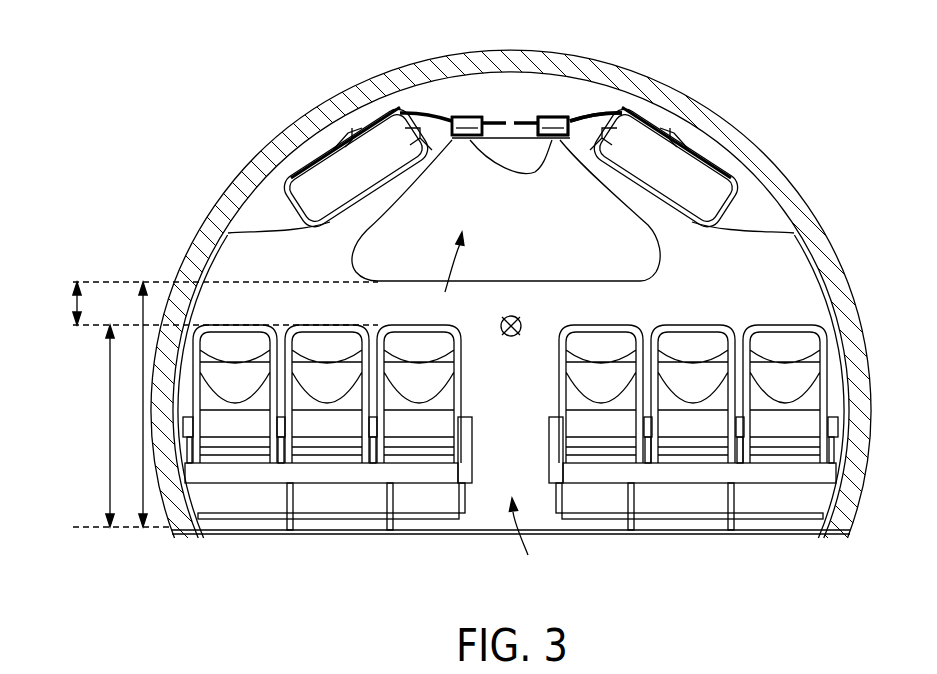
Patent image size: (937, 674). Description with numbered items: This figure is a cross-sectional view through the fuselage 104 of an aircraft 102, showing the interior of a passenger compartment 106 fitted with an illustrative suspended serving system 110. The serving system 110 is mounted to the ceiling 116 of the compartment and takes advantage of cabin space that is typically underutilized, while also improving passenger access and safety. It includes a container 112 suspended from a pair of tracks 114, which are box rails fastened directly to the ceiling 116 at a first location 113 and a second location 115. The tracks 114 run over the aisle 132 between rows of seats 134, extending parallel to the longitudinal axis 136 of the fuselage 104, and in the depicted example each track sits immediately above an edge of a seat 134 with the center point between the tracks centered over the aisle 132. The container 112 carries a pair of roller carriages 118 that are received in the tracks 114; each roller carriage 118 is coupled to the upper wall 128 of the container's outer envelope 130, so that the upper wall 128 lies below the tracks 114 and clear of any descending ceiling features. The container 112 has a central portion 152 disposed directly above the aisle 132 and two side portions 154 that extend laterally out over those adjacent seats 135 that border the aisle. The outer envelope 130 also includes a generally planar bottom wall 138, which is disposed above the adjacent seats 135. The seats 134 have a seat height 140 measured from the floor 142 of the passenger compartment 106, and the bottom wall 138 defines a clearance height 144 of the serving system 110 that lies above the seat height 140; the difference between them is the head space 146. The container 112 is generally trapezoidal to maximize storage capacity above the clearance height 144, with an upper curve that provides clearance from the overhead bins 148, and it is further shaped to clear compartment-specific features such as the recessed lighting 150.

The aircraft 102 is at (468, 337).
The fuselage 104 is at (690, 122).
The passenger compartment 106 is at (814, 287).
The suspended serving system 110 is at (301, 94).
The container 112 is at (508, 227).
The first location 113 is at (449, 105).
The tracks 114 is at (498, 111).
The second location 115 is at (538, 101).
The ceiling 116 is at (553, 117).
The roller carriages 118 is at (473, 137).
The upper wall 128 is at (552, 140).
The outer envelope 130 is at (645, 276).
The aisle 132 is at (527, 545).
The seats 134 is at (805, 346).
The adjacent seats 135 is at (547, 419).
The longitudinal axis 136 is at (526, 320).
The bottom wall 138 is at (490, 281).
The seat height 140 is at (110, 363).
The floor 142 is at (222, 534).
The clearance height 144 is at (141, 403).
The head space 146 is at (72, 292).
The overhead bins 148 is at (703, 180).
The recessed lighting 150 is at (593, 130).
The central portion 152 is at (448, 277).
The side portions 154 is at (358, 249).